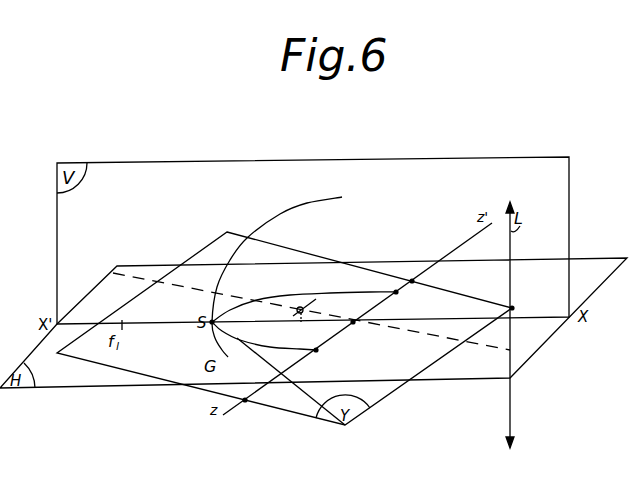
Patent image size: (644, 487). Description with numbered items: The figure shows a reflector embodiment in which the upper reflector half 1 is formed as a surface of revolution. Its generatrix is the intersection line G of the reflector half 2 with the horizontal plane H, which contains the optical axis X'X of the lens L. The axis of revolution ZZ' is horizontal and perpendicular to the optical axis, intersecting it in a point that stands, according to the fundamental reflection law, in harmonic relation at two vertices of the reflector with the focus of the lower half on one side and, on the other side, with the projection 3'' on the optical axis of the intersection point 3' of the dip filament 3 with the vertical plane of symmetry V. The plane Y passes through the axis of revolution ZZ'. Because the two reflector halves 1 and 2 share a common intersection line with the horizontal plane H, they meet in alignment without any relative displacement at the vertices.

The upper reflector half 1 is at (308, 203).
The reflector half 2 is at (306, 398).
The dip filament 3 is at (278, 314).
The intersection point 3' is at (306, 294).
The projection 3'' is at (303, 329).